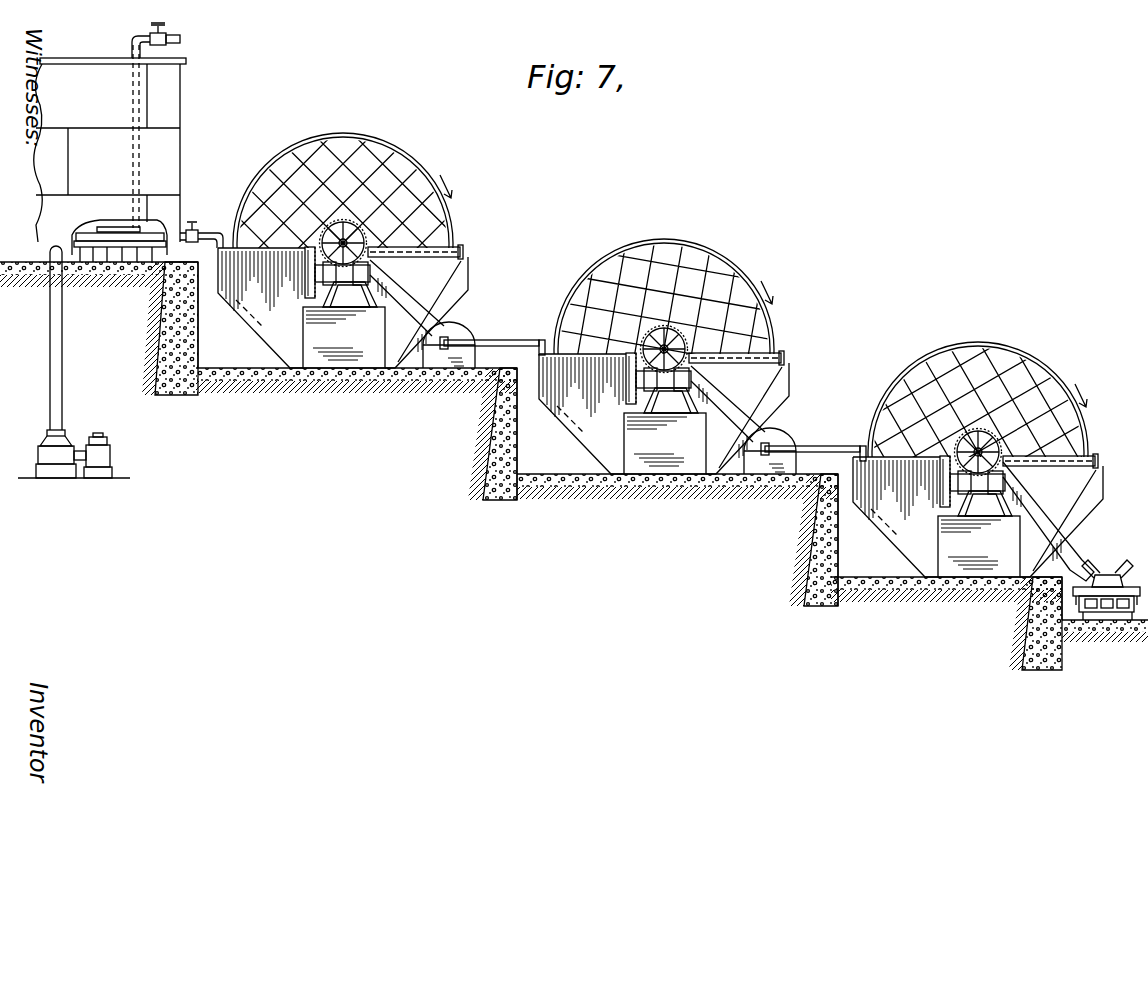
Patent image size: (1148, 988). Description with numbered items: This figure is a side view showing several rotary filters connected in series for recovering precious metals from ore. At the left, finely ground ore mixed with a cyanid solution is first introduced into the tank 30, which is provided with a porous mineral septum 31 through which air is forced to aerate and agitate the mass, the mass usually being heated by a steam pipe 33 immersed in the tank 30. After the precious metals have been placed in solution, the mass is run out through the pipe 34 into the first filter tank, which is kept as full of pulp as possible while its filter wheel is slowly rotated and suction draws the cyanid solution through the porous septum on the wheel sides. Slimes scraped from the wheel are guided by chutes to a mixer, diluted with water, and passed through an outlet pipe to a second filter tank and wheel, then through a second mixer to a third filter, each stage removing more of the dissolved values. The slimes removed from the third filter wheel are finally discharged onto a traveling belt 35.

The tank 30 is at (172, 112).
The porous mineral septum 31 is at (120, 252).
The steam pipe 33 is at (182, 40).
The pipe 34 is at (197, 226).
The traveling belt 35 is at (1106, 578).